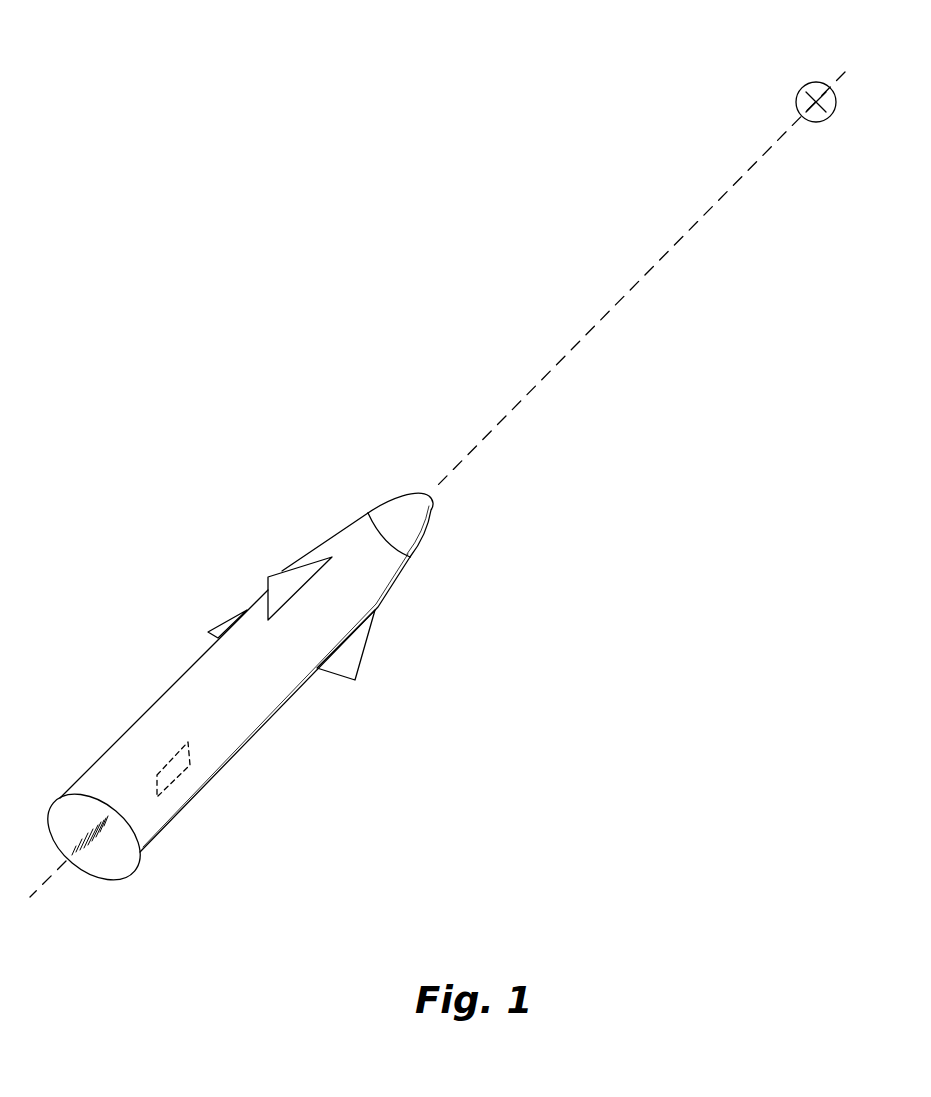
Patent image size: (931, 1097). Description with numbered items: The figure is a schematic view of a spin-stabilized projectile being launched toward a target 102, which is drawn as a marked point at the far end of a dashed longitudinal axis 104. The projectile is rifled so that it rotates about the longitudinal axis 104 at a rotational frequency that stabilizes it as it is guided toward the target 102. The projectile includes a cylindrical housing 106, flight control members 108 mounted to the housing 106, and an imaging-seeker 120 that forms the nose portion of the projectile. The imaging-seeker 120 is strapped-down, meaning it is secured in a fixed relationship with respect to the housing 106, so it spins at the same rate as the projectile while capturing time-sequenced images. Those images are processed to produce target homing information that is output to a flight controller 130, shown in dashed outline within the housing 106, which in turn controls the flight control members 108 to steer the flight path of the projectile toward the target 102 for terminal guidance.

The target 102 is at (812, 82).
The longitudinal axis 104 is at (598, 318).
The housing 106 is at (187, 817).
The flight control members 108 is at (214, 622).
The imaging-seeker 120 is at (387, 503).
The flight controller 130 is at (190, 755).